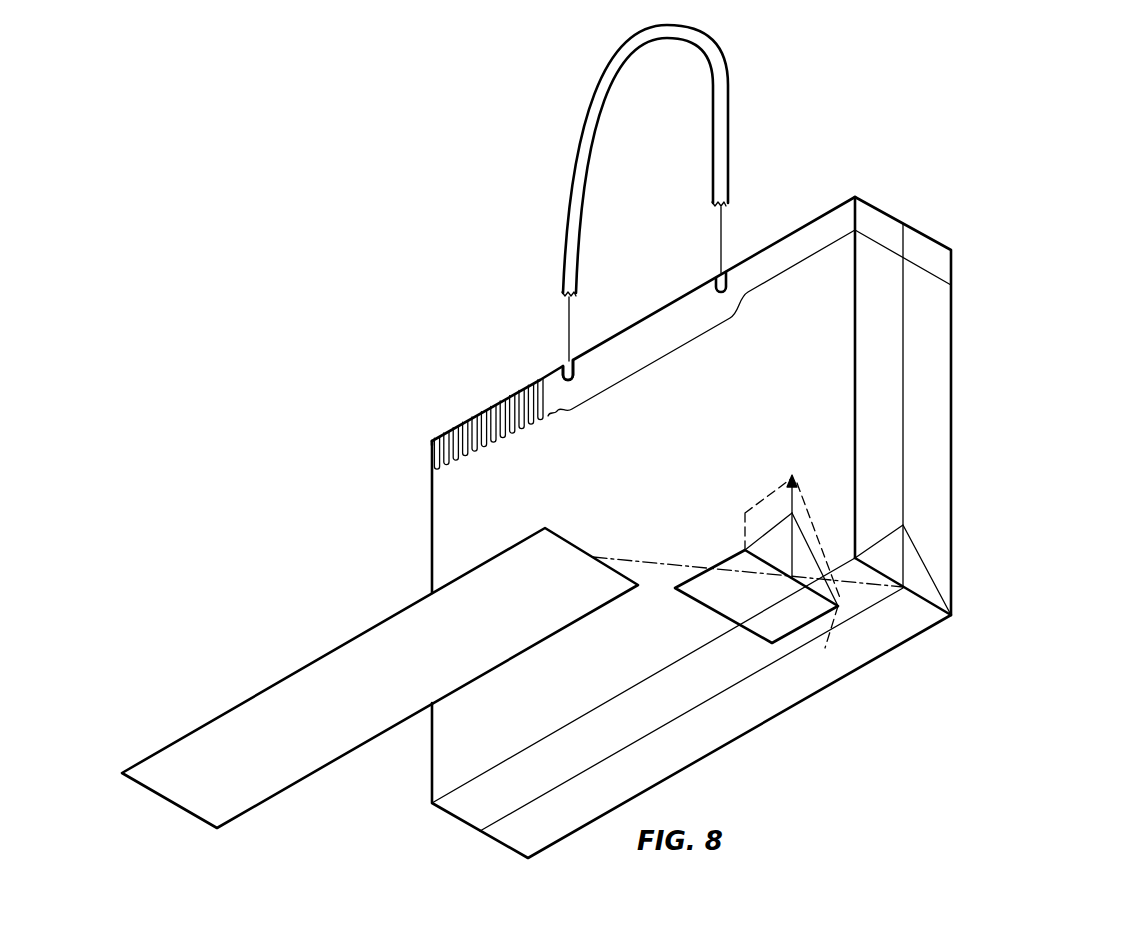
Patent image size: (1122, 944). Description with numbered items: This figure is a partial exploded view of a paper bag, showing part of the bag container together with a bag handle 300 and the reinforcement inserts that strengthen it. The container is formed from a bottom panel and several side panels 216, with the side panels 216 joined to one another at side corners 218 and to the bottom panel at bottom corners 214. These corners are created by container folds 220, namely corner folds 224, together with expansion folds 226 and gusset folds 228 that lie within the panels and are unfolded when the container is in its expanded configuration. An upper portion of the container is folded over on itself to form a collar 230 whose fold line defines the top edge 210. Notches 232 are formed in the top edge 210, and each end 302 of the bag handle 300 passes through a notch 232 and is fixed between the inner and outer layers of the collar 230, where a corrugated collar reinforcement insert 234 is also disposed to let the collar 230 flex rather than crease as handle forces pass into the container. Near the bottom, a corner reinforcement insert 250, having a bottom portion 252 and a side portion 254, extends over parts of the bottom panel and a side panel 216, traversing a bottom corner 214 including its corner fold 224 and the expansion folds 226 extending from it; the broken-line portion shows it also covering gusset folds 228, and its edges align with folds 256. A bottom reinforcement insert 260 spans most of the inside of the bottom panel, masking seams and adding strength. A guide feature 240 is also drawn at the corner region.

The top edge 210 is at (650, 313).
The bottom corner 214 is at (587, 713).
The side panel 216 is at (440, 512).
The side corner 218 is at (855, 383).
The container folds 220 is at (763, 479).
The corner fold 224 is at (512, 757).
The expansion fold 226 is at (903, 367).
The gusset fold 228 is at (960, 540).
The collar 230 is at (823, 230).
The notch 232 is at (566, 360).
The collar reinforcement insert 234 is at (448, 432).
The corner guide 240 is at (903, 567).
The corner reinforcement insert 250 is at (748, 582).
The bottom portion 252 is at (720, 595).
The side portion 254 is at (780, 523).
The folds 256 is at (806, 528).
The bottom reinforcement insert 260 is at (267, 695).
The bag handle 300 is at (573, 153).
The end 302 is at (563, 292).